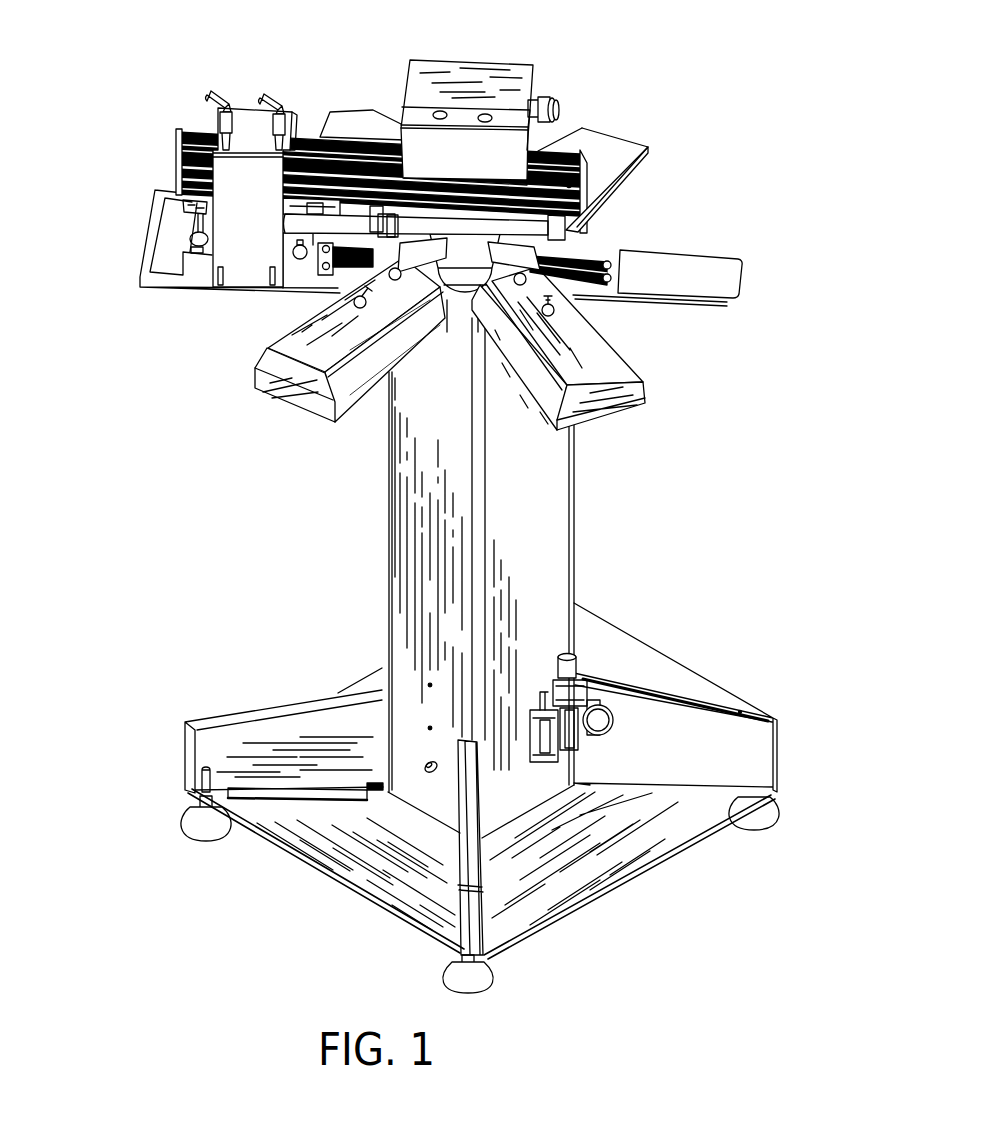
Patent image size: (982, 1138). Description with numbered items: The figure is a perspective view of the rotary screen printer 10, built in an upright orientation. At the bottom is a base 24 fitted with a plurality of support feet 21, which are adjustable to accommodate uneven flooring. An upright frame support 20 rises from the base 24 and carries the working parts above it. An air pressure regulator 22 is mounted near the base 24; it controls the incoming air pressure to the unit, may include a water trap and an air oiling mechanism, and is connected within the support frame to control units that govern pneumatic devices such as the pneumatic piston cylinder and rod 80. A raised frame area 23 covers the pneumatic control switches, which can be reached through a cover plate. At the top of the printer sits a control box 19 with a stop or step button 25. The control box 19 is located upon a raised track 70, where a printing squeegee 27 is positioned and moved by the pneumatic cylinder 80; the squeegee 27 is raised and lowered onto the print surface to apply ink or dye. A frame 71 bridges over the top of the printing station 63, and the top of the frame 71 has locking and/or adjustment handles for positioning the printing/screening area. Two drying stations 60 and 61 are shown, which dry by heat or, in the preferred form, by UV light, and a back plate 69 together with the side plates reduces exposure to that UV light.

The rotary screen printer 10 is at (750, 160).
The control box 19 is at (442, 58).
The upright frame support 20 is at (382, 550).
The support feet 21 is at (186, 832).
The air pressure regulator 22 is at (575, 662).
The raised frame area 23 is at (700, 670).
The base 24 is at (330, 877).
The stop or step button 25 is at (553, 98).
The printing squeegee 27 is at (185, 222).
The drying station 60 is at (298, 404).
The drying station 61 is at (638, 375).
The printing station 63 is at (212, 272).
The back plate 69 is at (618, 418).
The raised track 70 is at (363, 145).
The frame 71 is at (248, 108).
The pneumatic piston cylinder and rod 80 is at (512, 220).